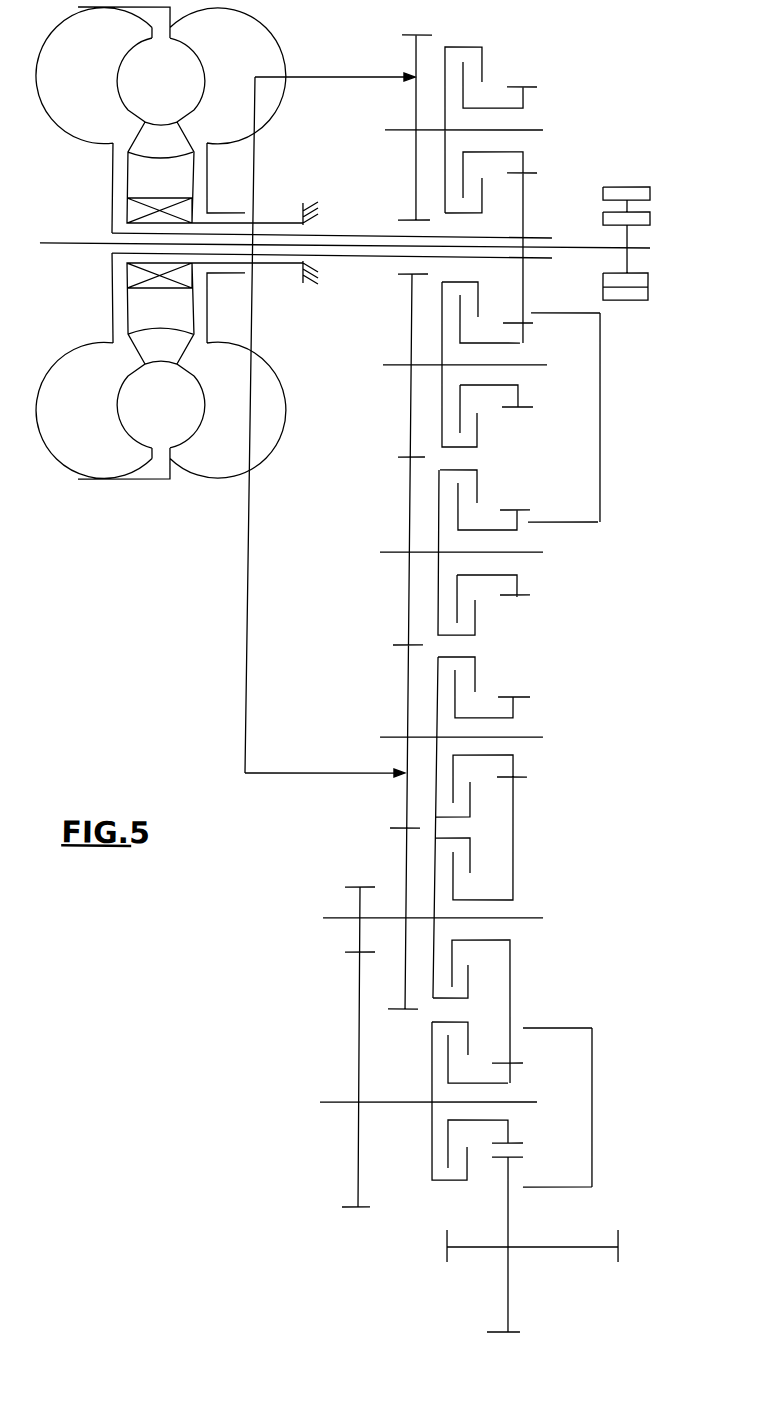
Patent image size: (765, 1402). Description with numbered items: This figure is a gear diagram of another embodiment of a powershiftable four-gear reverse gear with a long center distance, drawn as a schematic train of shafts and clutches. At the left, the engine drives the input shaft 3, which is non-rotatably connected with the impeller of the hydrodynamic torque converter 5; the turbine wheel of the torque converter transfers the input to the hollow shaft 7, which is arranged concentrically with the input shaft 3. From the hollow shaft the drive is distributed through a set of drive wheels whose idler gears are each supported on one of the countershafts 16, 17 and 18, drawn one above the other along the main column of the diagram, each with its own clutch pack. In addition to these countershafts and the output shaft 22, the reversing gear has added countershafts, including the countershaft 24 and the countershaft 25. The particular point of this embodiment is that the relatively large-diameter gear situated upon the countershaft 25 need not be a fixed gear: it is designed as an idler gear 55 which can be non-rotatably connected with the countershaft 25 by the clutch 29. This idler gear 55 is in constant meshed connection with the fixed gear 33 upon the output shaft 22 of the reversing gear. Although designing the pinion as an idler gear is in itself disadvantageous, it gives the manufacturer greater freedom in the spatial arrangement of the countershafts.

The hydrodynamic torque converter 5 is at (134, 489).
The input shaft 3 is at (327, 246).
The hollow shaft 7 is at (345, 259).
The countershaft 16 is at (536, 129).
The countershaft 17 is at (515, 521).
The countershaft 18 is at (538, 551).
The countershaft 24 is at (535, 736).
The idler gear 55 is at (514, 816).
The countershaft 25 is at (533, 917).
The clutch 29 is at (471, 980).
The fixed gear 33 is at (516, 1027).
The output shaft 22 is at (555, 1246).